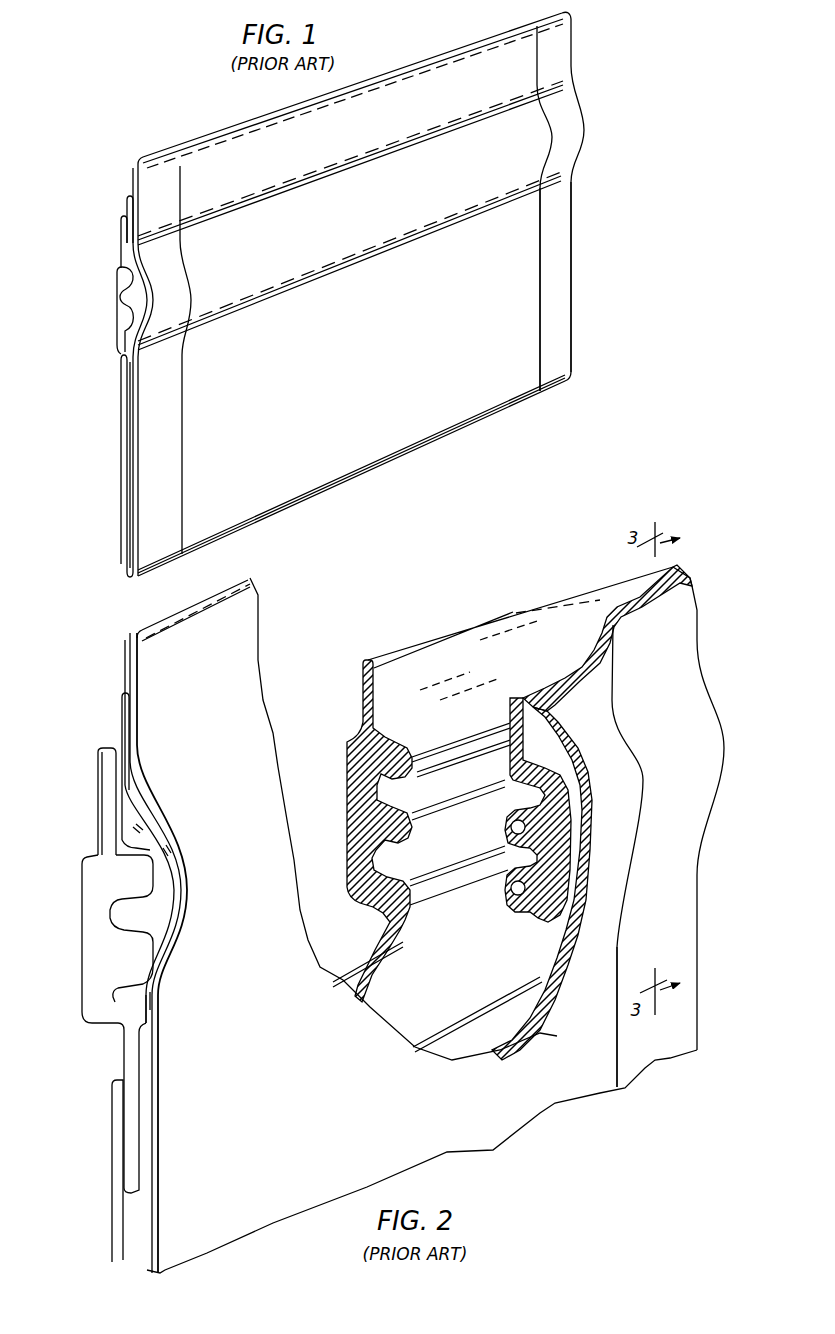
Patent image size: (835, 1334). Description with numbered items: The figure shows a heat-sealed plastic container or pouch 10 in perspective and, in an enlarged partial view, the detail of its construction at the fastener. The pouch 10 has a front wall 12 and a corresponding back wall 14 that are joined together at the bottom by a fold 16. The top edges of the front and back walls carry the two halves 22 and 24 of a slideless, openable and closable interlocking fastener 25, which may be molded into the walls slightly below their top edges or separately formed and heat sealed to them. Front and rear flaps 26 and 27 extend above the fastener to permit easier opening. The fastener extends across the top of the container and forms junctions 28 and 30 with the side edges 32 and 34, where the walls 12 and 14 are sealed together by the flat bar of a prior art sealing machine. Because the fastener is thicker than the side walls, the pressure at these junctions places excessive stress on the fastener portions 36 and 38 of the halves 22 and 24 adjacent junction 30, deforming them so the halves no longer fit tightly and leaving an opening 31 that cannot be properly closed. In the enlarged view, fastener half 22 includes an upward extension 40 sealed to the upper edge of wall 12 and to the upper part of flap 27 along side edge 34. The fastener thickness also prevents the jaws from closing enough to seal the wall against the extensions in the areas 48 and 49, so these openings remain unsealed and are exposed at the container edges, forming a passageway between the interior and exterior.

In FIG. 1, the plastic container or pouch 10 is at (106, 192).
In FIG. 2, the plastic container or pouch 10 is at (95, 724).
In FIG. 1, the front wall 12 is at (129, 512).
In FIG. 2, the front wall 12 is at (485, 1115).
In FIG. 1, the back wall 14 is at (120, 456).
In FIG. 2, the back wall 14 is at (118, 1148).
In FIG. 1, the fold 16 is at (126, 573).
In FIG. 1, the fastener half 22 is at (140, 291).
In FIG. 2, the fastener half 22 is at (140, 908).
In FIG. 1, the fastener half 24 is at (120, 293).
In FIG. 2, the fastener half 24 is at (88, 916).
In FIG. 1, the interlocking fastener 25 is at (530, 137).
In FIG. 2, the interlocking fastener 25 is at (84, 858).
In FIG. 1, the front flap 26 is at (216, 146).
In FIG. 2, the front flap 26 is at (240, 632).
In FIG. 2, the rear flap 27 is at (102, 782).
In FIG. 1, the junction 28 is at (182, 410).
In FIG. 1, the junction 30 is at (539, 277).
In FIG. 2, the junction 30 is at (615, 993).
In FIG. 2, the opening 31 is at (585, 628).
In FIG. 1, the side edge 32 is at (165, 462).
In FIG. 1, the side edge 34 is at (563, 259).
In FIG. 2, the side edge 34 is at (705, 743).
In FIG. 2, the fastener portion 36 is at (525, 632).
In FIG. 2, the fastener portion 38 is at (610, 707).
In FIG. 2, the upward extension 40 is at (120, 708).
In FIG. 1, the unsealed area or opening 48 is at (133, 262).
In FIG. 2, the unsealed area or opening 48 is at (143, 837).
In FIG. 1, the unsealed area or opening 49 is at (130, 318).
In FIG. 2, the unsealed area or opening 49 is at (152, 995).